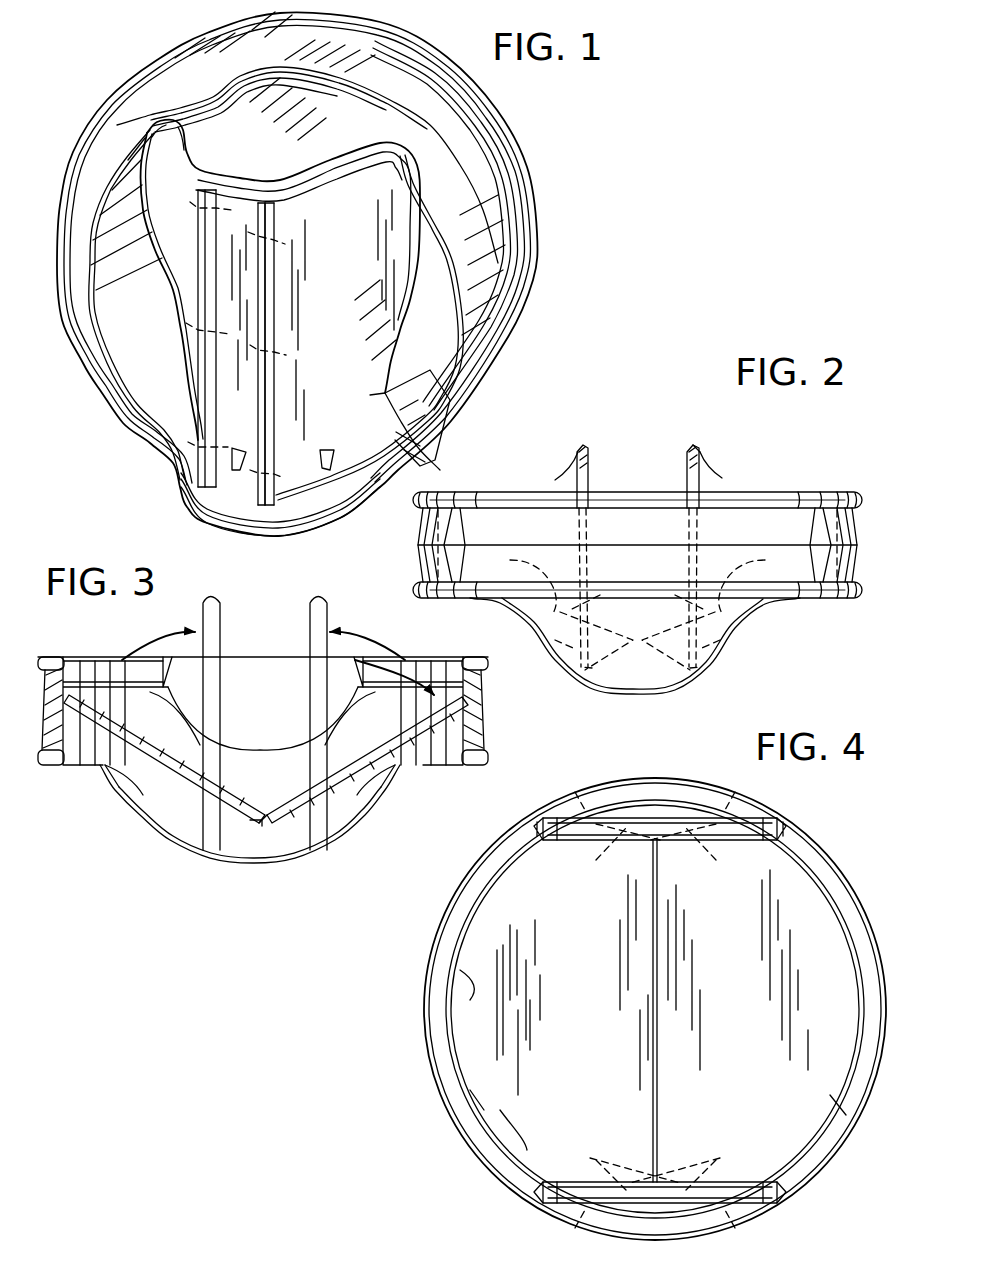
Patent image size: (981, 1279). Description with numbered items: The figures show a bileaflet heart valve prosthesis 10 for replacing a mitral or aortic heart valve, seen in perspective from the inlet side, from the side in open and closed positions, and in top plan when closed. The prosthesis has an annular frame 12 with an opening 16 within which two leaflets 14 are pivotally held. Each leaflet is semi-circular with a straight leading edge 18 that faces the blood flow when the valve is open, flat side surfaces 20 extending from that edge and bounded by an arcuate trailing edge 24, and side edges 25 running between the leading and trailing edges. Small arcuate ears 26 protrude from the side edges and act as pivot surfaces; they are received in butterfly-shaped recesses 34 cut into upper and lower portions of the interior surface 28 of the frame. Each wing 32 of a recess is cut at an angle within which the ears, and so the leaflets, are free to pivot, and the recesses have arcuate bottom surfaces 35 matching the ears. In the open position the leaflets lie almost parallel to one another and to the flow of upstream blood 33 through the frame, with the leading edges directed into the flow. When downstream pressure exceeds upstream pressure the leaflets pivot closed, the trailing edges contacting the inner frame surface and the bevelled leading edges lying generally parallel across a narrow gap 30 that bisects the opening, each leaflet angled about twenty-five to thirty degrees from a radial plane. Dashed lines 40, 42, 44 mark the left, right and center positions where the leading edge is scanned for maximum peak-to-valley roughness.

In FIG. 1, the bileaflet heart valve prosthesis 10 is at (556, 164).
In FIG. 2, the bileaflet heart valve prosthesis 10 is at (788, 458).
In FIG. 4, the bileaflet heart valve prosthesis 10 is at (806, 818).
In FIG. 1, the annular frame 12 is at (440, 440).
In FIG. 2, the annular frame 12 is at (782, 490).
In FIG. 3, the annular frame 12 is at (93, 697).
In FIG. 4, the annular frame 12 is at (832, 852).
In FIG. 1, the leaflets 14 is at (398, 280).
In FIG. 2, the leaflets 14 is at (590, 452).
In FIG. 3, the leaflets 14 is at (140, 755).
In FIG. 4, the leaflets 14 is at (517, 930).
In FIG. 1, the opening 16 is at (445, 300).
In FIG. 1, the leading edge 18 is at (264, 508).
In FIG. 2, the leading edge 18 is at (684, 668).
In FIG. 3, the leading edge 18 is at (262, 812).
In FIG. 4, the leading edge 18 is at (652, 1033).
In FIG. 1, the flat side surfaces 20 is at (370, 330).
In FIG. 2, the flat side surfaces 20 is at (577, 478).
In FIG. 3, the flat side surfaces 20 is at (143, 795).
In FIG. 4, the flat side surfaces 20 is at (525, 1120).
In FIG. 1, the arcuate trailing edge 24 is at (372, 395).
In FIG. 2, the arcuate trailing edge 24 is at (700, 446).
In FIG. 3, the arcuate trailing edge 24 is at (468, 700).
In FIG. 4, the arcuate trailing edge 24 is at (467, 1093).
In FIG. 4, the side edges 25 is at (563, 840).
In FIG. 1, the ears 26 is at (225, 505).
In FIG. 4, the ears 26 is at (575, 790).
In FIG. 1, the interior surface 28 is at (140, 355).
In FIG. 2, the interior surface 28 is at (812, 598).
In FIG. 3, the interior surface 28 is at (80, 742).
In FIG. 4, the interior surface 28 is at (466, 985).
In FIG. 3, the narrow gap 30 is at (264, 822).
In FIG. 4, the narrow gap 30 is at (658, 1078).
In FIG. 2, the wing 32 is at (568, 620).
In FIG. 3, the wing 32 is at (200, 760).
In FIG. 2, the flow of upstream blood 33 is at (640, 675).
In FIG. 1, the butterfly-shaped recesses 34 is at (240, 466).
In FIG. 2, the butterfly-shaped recesses 34 is at (560, 622).
In FIG. 3, the butterfly-shaped recesses 34 is at (244, 832).
In FIG. 4, the butterfly-shaped recesses 34 is at (628, 830).
In FIG. 2, the arcuate bottom surfaces 35 is at (510, 562).
In FIG. 1, the dashed line 40 is at (190, 205).
In FIG. 1, the dashed line 42 is at (196, 440).
In FIG. 1, the dashed line 44 is at (197, 332).